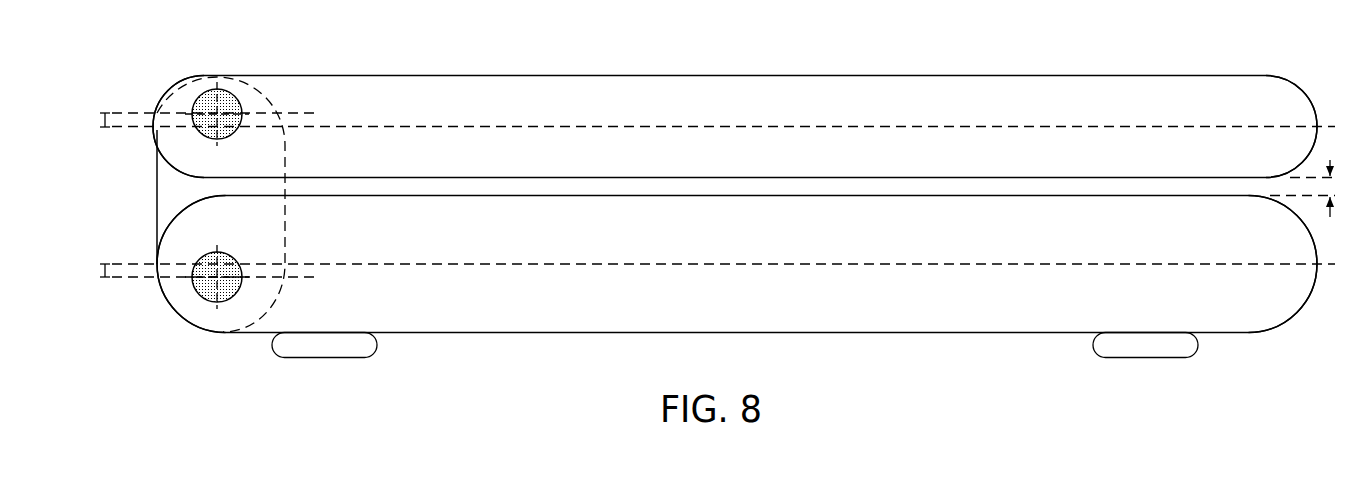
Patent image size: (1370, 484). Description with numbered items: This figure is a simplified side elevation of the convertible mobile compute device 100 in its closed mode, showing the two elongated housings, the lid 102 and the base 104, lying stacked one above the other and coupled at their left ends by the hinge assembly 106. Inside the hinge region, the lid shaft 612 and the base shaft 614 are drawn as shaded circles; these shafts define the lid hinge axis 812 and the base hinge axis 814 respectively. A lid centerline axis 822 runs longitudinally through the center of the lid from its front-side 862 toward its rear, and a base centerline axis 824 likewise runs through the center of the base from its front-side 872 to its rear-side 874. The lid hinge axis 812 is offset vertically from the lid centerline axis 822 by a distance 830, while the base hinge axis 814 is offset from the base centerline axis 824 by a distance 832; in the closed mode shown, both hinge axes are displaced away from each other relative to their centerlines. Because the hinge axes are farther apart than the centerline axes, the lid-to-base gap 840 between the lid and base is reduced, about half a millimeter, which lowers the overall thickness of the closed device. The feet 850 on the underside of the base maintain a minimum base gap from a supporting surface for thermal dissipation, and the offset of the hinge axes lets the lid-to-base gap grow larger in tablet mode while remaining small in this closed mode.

The convertible mobile compute device 100 is at (1220, 66).
The base 102 is at (752, 74).
The lid 104 is at (752, 333).
The hinge assembly 106 is at (156, 188).
The lid shaft 612 is at (231, 136).
The base shaft 614 is at (227, 254).
The lid hinge axis 812 is at (212, 117).
The base hinge axis 814 is at (214, 279).
The lid centerline axis 822 is at (877, 126).
The base centerline axis 824 is at (877, 263).
The distance 830 is at (104, 120).
The distance 832 is at (104, 270).
The lid-to-base gap 840 is at (1330, 168).
The feet 850 is at (308, 353).
The front-side 862 is at (141, 94).
The front-side 872 is at (1326, 307).
The rear-side 874 is at (145, 301).